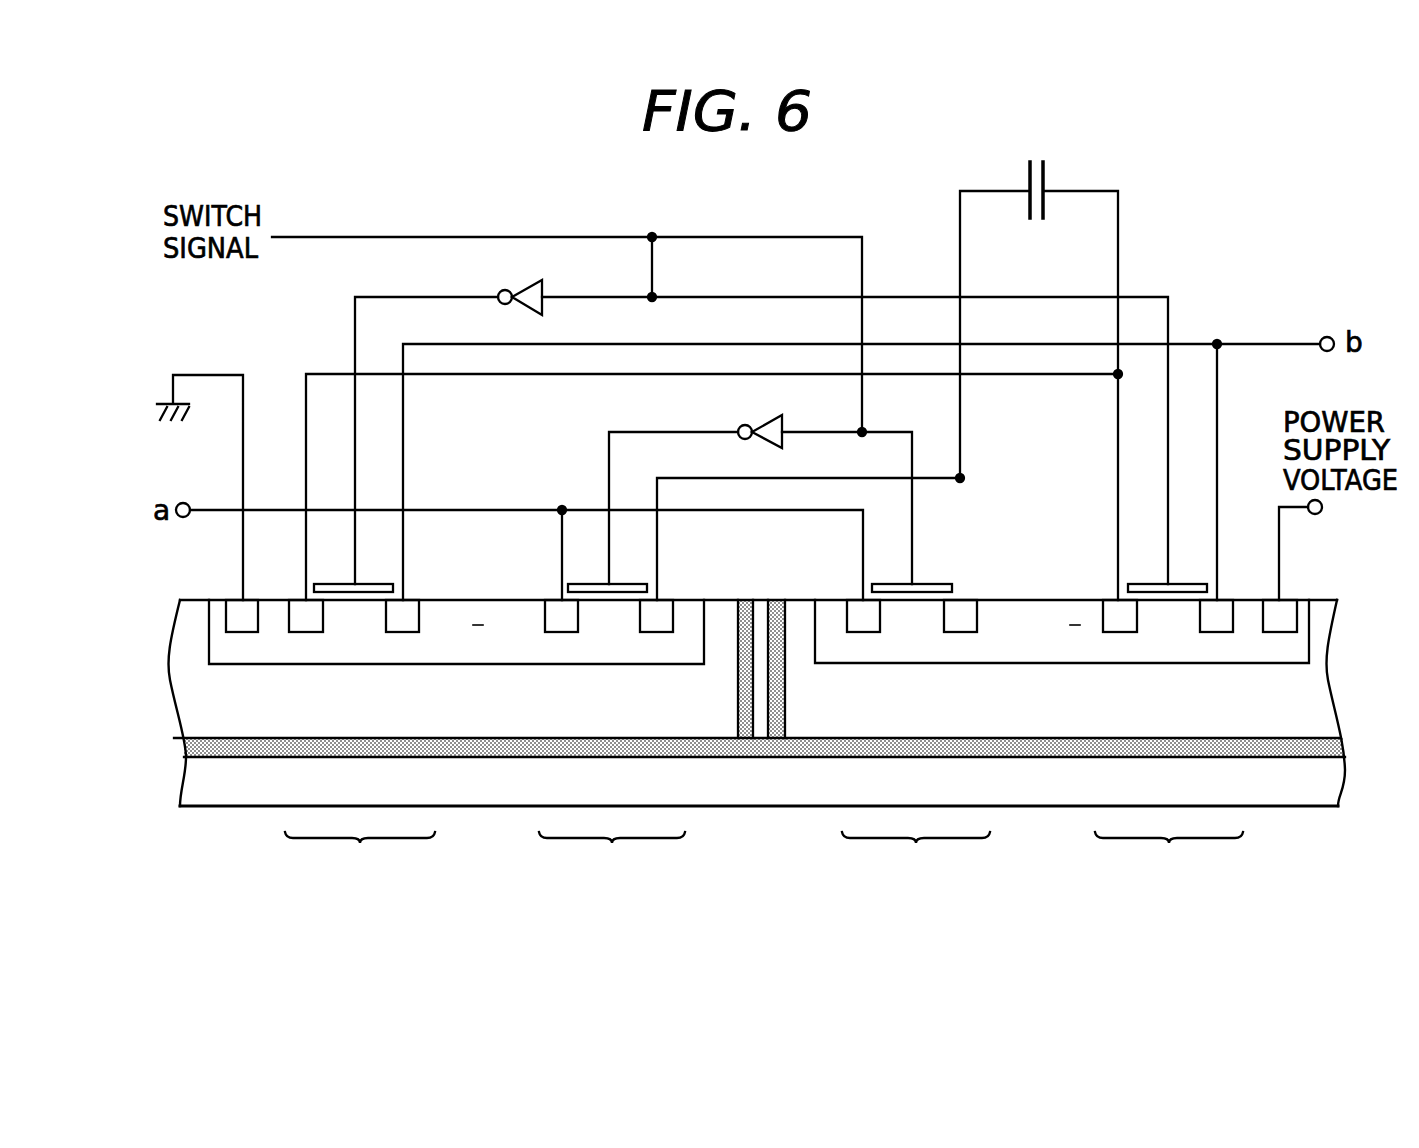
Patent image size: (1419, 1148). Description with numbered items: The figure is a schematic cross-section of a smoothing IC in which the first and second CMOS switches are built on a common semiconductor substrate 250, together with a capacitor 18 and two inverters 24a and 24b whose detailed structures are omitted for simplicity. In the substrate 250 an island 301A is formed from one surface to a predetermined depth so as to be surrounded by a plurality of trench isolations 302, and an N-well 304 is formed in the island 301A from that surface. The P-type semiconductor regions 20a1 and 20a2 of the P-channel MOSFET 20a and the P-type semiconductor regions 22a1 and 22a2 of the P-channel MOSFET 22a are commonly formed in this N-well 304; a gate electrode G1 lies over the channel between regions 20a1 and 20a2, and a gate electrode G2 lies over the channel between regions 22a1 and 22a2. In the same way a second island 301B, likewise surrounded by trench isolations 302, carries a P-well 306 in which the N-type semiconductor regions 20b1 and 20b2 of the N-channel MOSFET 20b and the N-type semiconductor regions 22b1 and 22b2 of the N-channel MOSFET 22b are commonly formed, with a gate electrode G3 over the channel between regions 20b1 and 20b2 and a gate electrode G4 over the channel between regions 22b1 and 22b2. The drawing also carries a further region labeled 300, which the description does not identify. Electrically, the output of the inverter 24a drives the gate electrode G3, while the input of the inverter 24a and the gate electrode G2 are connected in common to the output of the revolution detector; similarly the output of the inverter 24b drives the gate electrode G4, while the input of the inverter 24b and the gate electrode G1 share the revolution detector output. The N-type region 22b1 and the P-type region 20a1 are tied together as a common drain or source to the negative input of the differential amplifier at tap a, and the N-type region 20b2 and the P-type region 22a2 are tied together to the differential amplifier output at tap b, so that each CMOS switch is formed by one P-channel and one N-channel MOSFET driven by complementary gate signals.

The capacitor 18 is at (1047, 176).
The inverter 24a is at (516, 283).
The inverter 24b is at (776, 416).
The common semiconductor substrate 250 is at (180, 676).
The buried layer / substrate body 300 is at (1048, 780).
The trench isolation 302 is at (745, 600).
The island 301A is at (1305, 708).
The island 301B is at (562, 707).
The N-well 304 is at (1260, 647).
The P-well 306 is at (257, 646).
The P-channel MOSFET 20a is at (916, 859).
The N-channel MOSFET 20b is at (360, 859).
The P-channel MOSFET 22a is at (1169, 859).
The N-channel MOSFET 22b is at (612, 859).
The P-type semiconductor region 20a1 is at (862, 632).
The P-type semiconductor region 20a2 is at (960, 632).
The N-type semiconductor region 20b1 is at (305, 632).
The N-type semiconductor region 20b2 is at (405, 632).
The P-type semiconductor region 22a1 is at (1120, 632).
The P-type semiconductor region 22a2 is at (1217, 632).
The N-type semiconductor region 22b1 is at (530, 600).
The N-type semiconductor region 22b2 is at (655, 632).
The gate electrode G1 is at (935, 583).
The gate electrode G2 is at (1190, 583).
The gate electrode G3 is at (375, 583).
The gate electrode G4 is at (632, 583).